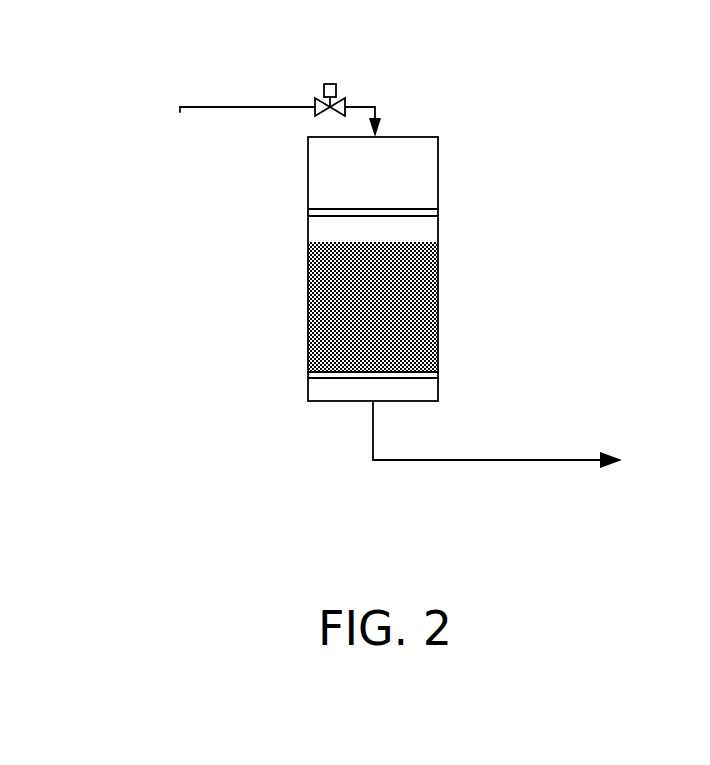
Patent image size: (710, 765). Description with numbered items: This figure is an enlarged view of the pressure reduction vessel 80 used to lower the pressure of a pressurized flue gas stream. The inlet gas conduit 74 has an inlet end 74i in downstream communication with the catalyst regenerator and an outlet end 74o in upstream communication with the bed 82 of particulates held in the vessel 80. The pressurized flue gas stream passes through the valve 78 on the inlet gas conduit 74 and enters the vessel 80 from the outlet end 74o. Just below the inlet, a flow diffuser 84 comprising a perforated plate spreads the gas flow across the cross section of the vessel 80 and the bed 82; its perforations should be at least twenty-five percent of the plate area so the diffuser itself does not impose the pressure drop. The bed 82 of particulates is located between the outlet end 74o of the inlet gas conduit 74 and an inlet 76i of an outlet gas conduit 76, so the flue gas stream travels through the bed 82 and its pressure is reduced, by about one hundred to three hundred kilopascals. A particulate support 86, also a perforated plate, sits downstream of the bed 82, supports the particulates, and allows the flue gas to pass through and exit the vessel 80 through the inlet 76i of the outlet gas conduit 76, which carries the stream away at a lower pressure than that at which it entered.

The inlet gas conduit 74 is at (230, 107).
The inlet end 74i is at (180, 109).
The outlet end 74o is at (375, 137).
The valve 78 is at (336, 88).
The pressure reduction vessel 80 is at (222, 268).
The flow diffuser 84 is at (405, 210).
The bed of particulates 82 is at (425, 288).
The particulate support 86 is at (438, 379).
The inlet 76i is at (375, 402).
The outlet gas conduit 76 is at (515, 460).